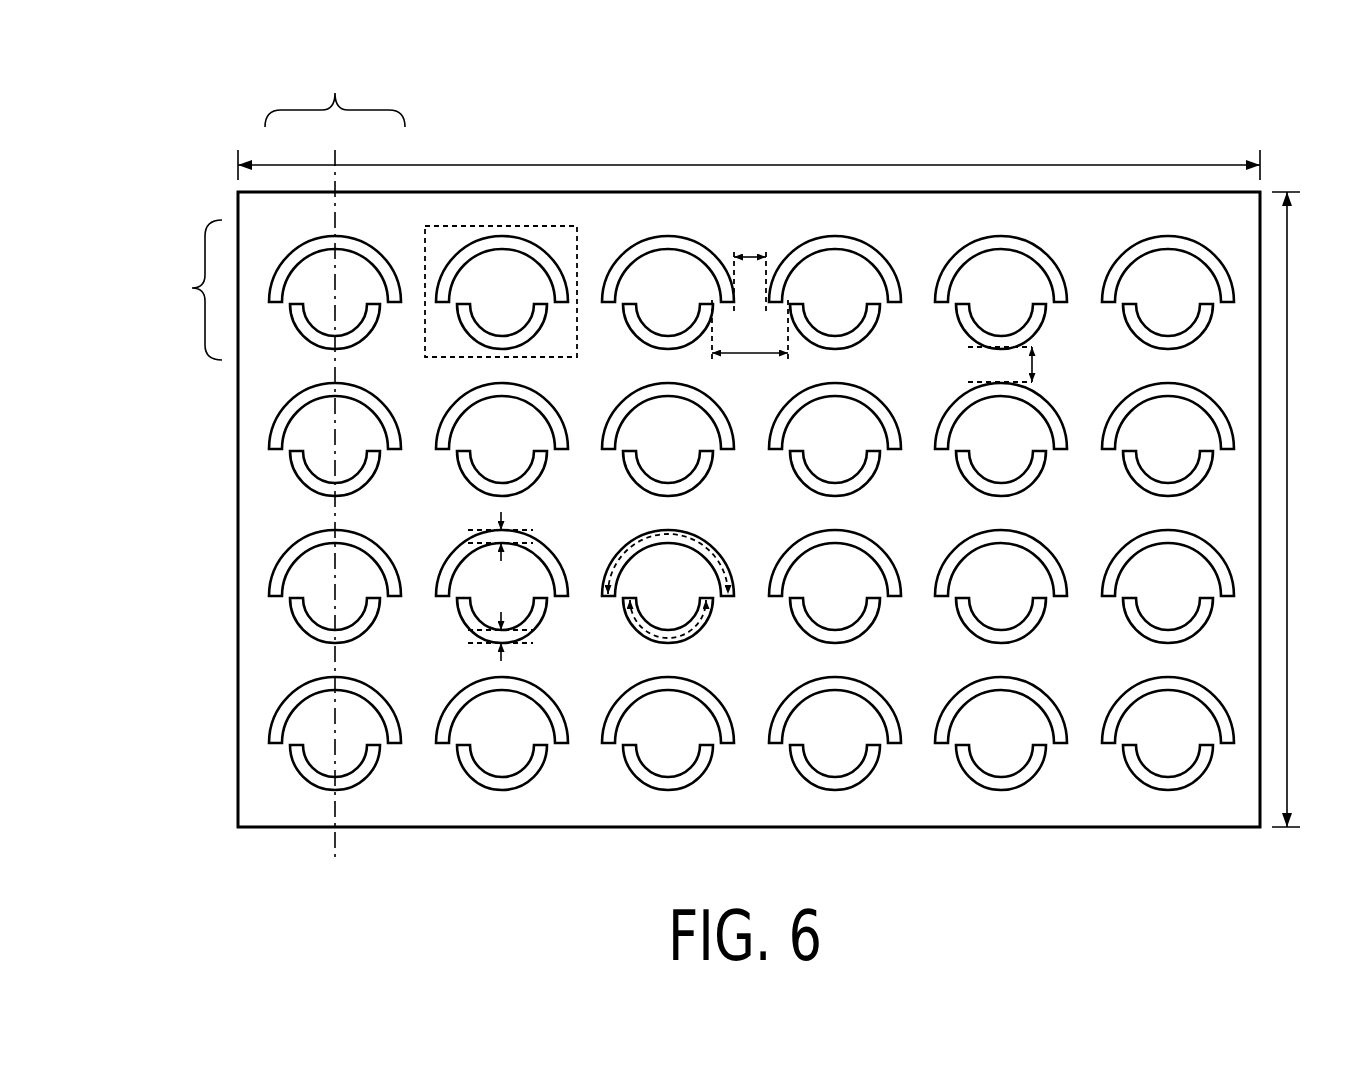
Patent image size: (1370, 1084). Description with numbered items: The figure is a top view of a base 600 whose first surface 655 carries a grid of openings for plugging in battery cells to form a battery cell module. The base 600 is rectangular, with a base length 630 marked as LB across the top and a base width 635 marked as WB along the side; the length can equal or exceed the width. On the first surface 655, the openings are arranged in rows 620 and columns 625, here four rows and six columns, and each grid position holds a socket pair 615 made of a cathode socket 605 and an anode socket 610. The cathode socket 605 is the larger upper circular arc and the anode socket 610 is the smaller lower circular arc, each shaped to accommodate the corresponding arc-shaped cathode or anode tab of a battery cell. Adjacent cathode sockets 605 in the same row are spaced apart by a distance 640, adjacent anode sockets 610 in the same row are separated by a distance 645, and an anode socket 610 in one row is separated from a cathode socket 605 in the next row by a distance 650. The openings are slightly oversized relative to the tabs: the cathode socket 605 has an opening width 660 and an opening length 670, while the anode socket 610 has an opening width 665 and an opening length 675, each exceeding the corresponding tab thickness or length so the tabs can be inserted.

The base 600 is at (987, 107).
The cathode socket 605 is at (555, 258).
The anode socket 610 is at (540, 328).
The socket pair 615 is at (530, 225).
The row 620 is at (182, 290).
The column 625 is at (335, 93).
The base length 630 is at (680, 165).
The base width 635 is at (1287, 468).
The distance 640 is at (750, 248).
The distance 645 is at (750, 343).
The distance 650 is at (1025, 364).
The first surface 655 is at (1241, 230).
The width of the opening in the cathode socket 660 is at (515, 513).
The width of the opening of the anode socket 665 is at (512, 666).
The length of the opening of the cathode socket 670 is at (704, 545).
The length of the opening of the anode socket 675 is at (694, 631).